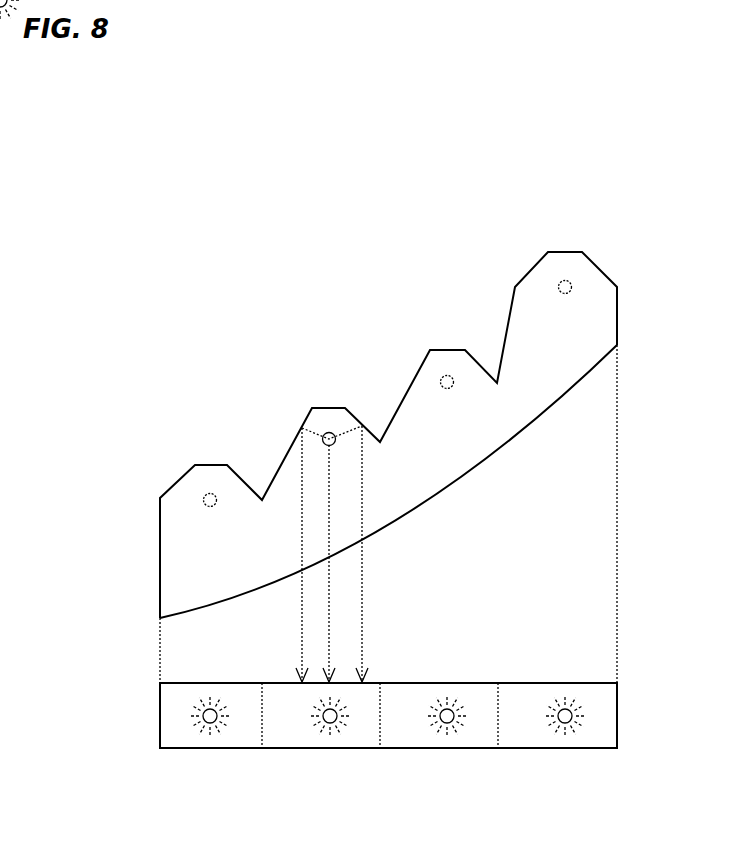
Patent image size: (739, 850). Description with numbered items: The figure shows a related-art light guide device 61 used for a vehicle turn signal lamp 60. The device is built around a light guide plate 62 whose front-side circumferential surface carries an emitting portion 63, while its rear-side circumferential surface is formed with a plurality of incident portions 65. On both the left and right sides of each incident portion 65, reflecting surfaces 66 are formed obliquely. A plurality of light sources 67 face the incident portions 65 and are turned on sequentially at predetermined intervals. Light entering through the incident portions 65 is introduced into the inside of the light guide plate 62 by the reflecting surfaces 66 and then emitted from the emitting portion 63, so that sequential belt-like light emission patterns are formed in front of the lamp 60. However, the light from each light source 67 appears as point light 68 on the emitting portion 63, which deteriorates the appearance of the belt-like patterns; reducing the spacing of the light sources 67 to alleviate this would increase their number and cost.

The turn signal lamp 60 is at (553, 665).
The light guide device 61 is at (160, 470).
The light guide plate 62 is at (178, 556).
The emitting portion 63 is at (406, 518).
The incident portions 65 is at (208, 482).
The reflecting surfaces 66 is at (290, 428).
The light sources 67 is at (447, 389).
The point light 68 is at (330, 740).